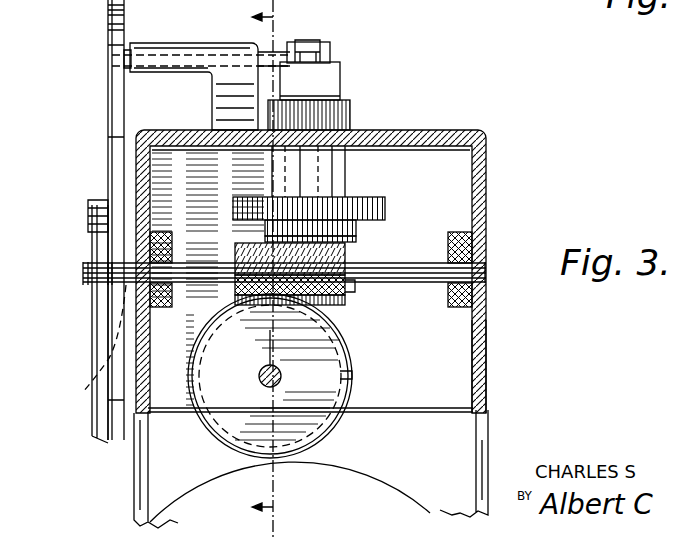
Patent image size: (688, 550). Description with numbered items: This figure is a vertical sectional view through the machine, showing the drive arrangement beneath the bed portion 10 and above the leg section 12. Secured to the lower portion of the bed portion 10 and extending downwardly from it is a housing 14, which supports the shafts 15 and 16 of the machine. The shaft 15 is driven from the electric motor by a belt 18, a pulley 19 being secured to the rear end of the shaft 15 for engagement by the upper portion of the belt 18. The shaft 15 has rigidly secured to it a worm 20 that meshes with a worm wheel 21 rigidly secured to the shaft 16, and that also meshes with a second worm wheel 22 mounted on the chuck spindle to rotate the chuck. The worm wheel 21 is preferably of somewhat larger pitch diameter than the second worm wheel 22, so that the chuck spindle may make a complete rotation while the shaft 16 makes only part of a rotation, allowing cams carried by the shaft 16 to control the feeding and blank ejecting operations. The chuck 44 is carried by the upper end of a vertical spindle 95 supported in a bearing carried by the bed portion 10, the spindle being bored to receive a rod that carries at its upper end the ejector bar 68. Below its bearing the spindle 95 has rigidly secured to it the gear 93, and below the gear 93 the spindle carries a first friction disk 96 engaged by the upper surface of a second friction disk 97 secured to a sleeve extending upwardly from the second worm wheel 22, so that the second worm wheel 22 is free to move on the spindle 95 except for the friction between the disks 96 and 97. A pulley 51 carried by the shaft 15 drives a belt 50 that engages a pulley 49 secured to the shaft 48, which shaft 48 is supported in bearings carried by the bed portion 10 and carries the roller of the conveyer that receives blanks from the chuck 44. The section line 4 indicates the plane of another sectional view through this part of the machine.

The section line 4- 4 is at (265, 273).
The bed portion 10 is at (430, 132).
The leg section 12 is at (488, 440).
The housing 14 is at (488, 378).
The shaft 15 is at (398, 283).
The shaft 16 is at (352, 384).
The belt 18 is at (92, 378).
The pulley 19 is at (92, 325).
The worm 20 is at (348, 306).
The worm wheel 21 is at (232, 440).
The second worm wheel 22 is at (355, 292).
The chuck 44 is at (330, 52).
The shaft 48 is at (188, 58).
The pulley 49 is at (106, 18).
The belt 50 is at (108, 153).
The pulley 51 is at (109, 338).
The ejector bar 68 is at (310, 46).
The gear 93 is at (380, 204).
The vertical spindle 95 is at (332, 88).
The first friction disk 96 is at (356, 222).
The second friction disk 97 is at (356, 238).